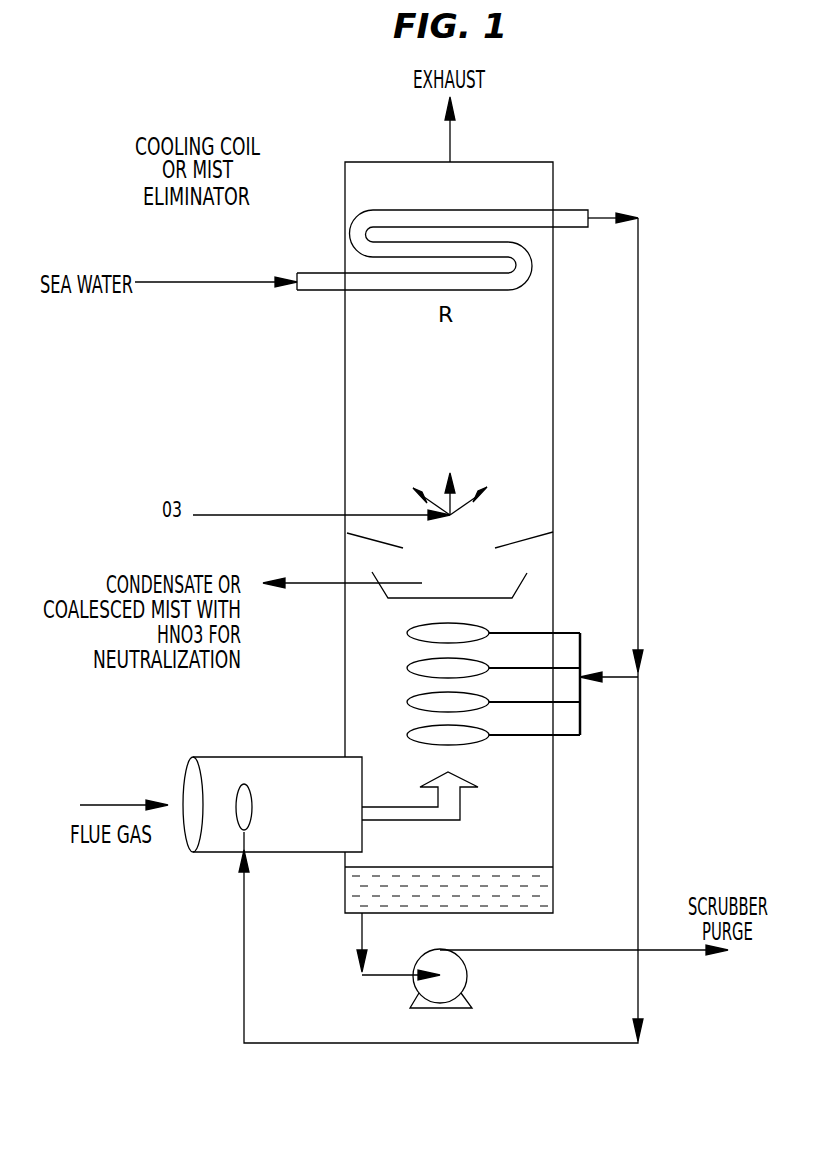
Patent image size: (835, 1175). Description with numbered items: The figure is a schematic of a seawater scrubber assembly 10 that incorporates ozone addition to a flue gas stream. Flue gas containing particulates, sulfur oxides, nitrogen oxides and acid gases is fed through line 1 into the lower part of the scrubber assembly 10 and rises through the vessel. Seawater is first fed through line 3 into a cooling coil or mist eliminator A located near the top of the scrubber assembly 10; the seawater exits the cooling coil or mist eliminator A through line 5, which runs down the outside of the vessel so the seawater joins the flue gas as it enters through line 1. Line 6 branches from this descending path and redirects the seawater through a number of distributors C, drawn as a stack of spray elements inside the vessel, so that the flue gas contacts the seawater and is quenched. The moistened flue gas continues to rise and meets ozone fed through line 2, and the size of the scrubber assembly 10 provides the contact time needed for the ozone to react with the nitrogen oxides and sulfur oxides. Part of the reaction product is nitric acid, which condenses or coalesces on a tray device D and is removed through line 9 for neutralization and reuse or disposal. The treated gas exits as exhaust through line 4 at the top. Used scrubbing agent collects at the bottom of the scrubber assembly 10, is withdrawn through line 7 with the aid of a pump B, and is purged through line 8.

The line 1 is at (110, 802).
The line 2 is at (288, 512).
The line 3 is at (202, 285).
The line 4 is at (453, 147).
The line 5 is at (642, 348).
The line 6 is at (613, 675).
The line 7 is at (375, 980).
The line 8 is at (680, 952).
The line 9 is at (318, 580).
The scrubber assembly 10 is at (345, 403).
The cooling coil or mist eliminator A is at (360, 203).
The pump B is at (452, 979).
The distributors C is at (493, 676).
The tray device D is at (528, 578).